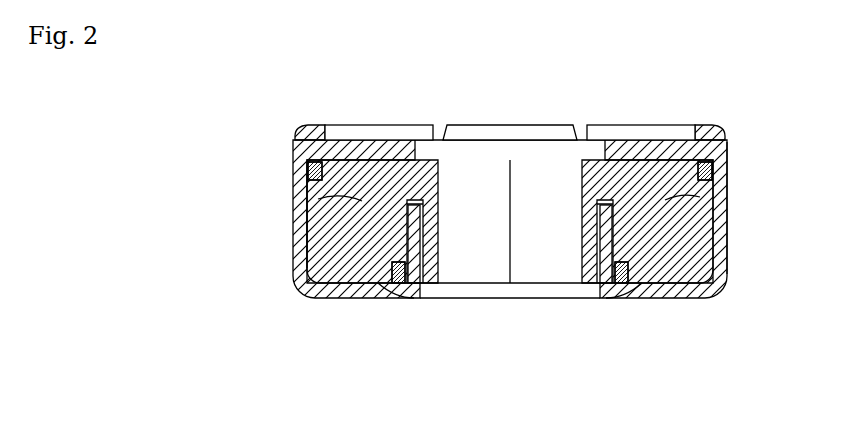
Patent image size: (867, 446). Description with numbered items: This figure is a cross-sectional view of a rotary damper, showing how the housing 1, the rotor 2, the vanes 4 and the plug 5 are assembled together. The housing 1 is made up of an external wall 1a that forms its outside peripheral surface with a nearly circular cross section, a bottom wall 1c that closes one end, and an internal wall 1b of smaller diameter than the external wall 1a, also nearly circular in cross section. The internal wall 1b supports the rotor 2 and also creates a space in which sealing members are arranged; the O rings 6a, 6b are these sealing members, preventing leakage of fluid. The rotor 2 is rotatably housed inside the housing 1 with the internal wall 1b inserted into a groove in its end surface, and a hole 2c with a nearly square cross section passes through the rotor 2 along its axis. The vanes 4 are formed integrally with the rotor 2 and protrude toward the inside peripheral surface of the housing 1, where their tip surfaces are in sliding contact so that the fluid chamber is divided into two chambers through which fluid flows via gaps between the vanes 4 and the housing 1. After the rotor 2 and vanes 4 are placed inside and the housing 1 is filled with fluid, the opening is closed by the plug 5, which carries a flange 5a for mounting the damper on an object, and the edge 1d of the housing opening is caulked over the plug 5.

The housing 1 is at (296, 216).
The external wall 1a is at (729, 216).
The internal wall 1b is at (421, 241).
The bottom wall 1c is at (662, 292).
The edge of the opening of the housing 1d is at (310, 128).
The rotor 2 is at (370, 177).
The hole 2c is at (542, 266).
The vanes 4 is at (325, 246).
The plug 5 is at (650, 140).
The flange 5a is at (503, 126).
The O ring 6a is at (307, 165).
The O ring 6b is at (397, 284).